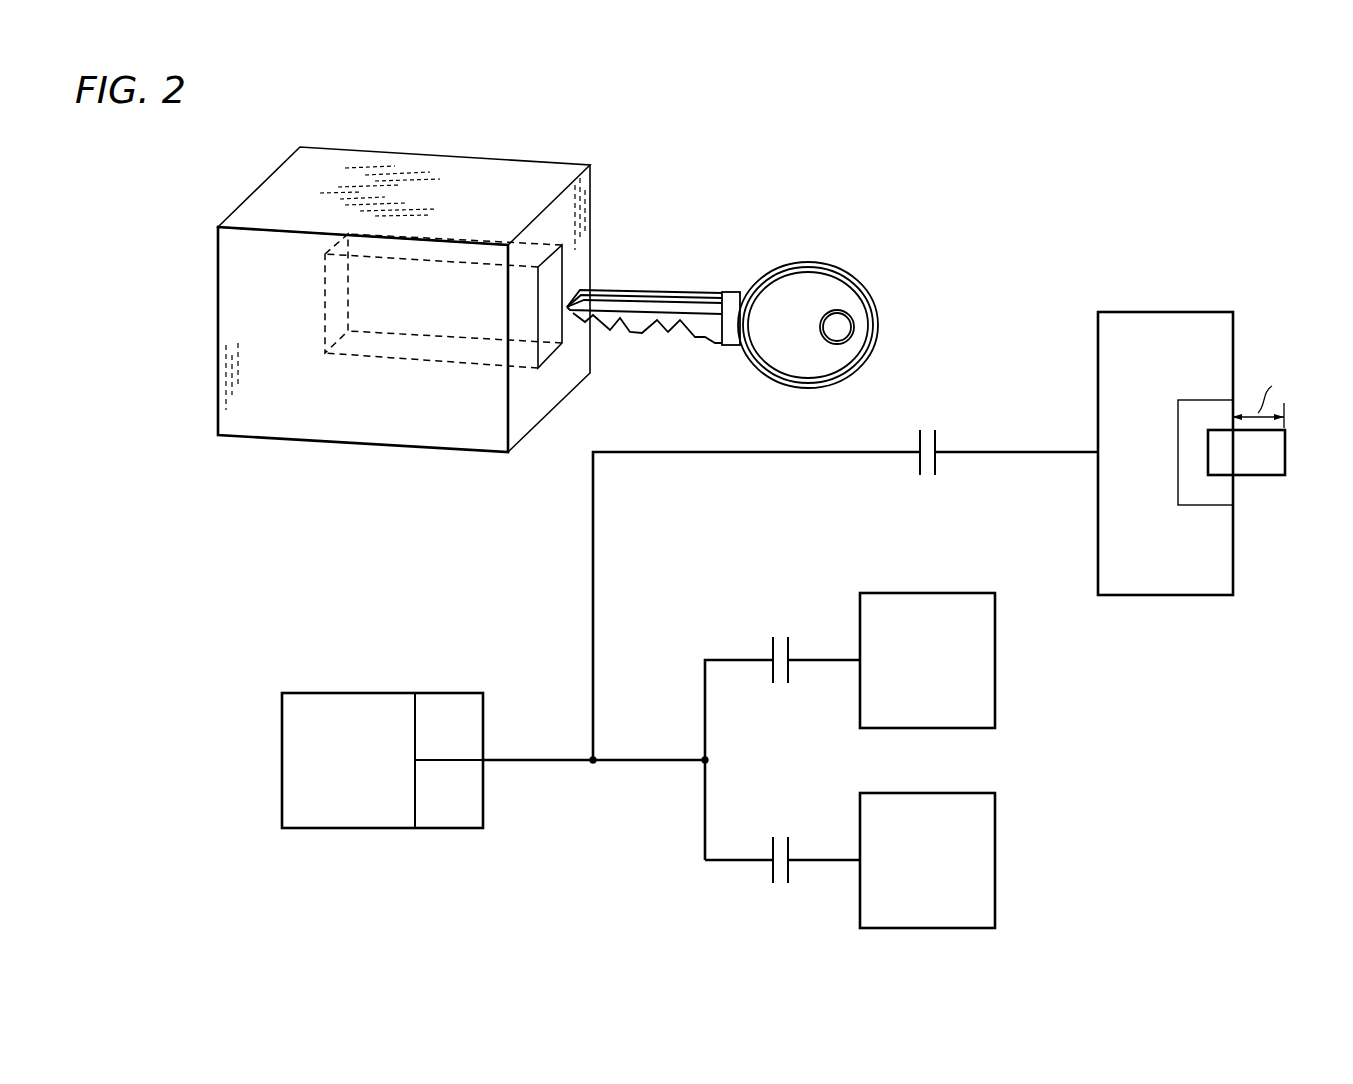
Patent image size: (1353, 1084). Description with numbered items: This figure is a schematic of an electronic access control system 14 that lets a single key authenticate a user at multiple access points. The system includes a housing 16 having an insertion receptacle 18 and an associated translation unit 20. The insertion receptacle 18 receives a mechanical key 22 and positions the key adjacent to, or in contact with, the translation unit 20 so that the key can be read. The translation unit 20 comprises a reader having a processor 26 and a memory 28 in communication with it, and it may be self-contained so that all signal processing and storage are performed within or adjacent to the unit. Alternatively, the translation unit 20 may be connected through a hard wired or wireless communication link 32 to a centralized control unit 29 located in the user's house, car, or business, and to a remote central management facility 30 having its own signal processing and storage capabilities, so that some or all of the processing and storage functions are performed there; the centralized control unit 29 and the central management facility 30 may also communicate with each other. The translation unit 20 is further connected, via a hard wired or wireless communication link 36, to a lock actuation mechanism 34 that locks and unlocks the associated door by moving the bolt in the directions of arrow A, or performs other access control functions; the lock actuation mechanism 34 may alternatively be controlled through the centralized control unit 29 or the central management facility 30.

The electronic access control system 14 is at (722, 146).
The housing 16 is at (453, 165).
The insertion receptacle 18 is at (550, 353).
The translation unit 20 is at (352, 672).
The mechanical key 22 is at (830, 251).
The processor 26 is at (449, 726).
The memory 28 is at (449, 794).
The centralized control unit 29 is at (927, 660).
The remote central management facility 30 is at (927, 860).
The communication link 32 is at (738, 680).
The lock actuation mechanism 34 is at (1178, 423).
The communication link 36 is at (708, 452).